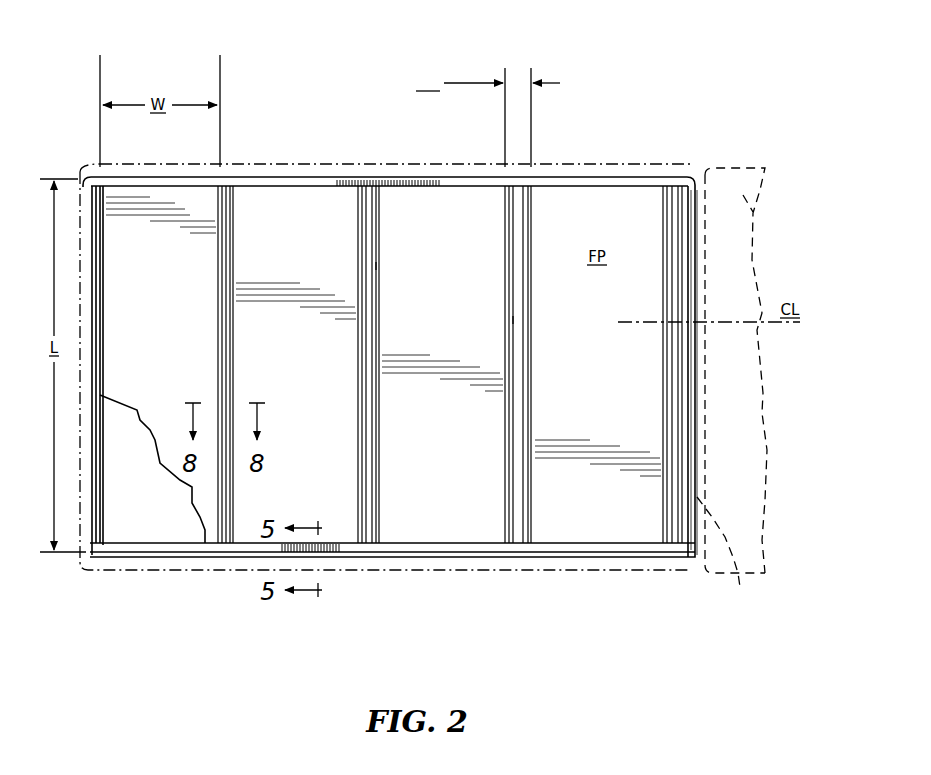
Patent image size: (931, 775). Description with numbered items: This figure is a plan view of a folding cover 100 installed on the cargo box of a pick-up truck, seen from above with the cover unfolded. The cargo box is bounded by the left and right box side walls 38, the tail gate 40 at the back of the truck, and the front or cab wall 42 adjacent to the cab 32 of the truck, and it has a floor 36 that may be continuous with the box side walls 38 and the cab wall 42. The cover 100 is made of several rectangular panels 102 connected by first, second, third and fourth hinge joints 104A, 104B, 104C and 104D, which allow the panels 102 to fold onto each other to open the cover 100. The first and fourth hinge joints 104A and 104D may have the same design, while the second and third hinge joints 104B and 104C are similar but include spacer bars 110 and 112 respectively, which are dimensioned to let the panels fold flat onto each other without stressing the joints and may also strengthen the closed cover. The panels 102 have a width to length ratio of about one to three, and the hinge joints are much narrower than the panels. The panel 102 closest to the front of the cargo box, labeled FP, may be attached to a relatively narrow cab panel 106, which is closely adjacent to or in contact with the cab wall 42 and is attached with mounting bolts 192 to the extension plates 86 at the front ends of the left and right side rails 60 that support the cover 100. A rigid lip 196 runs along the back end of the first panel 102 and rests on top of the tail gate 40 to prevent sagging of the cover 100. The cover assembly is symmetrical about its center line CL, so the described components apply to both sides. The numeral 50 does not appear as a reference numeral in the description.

The cab 32 is at (760, 213).
The floor 36 is at (157, 528).
The box side walls 38 is at (279, 165).
The tail gate 40 is at (84, 190).
The cab wall 42 is at (738, 590).
The stud spacing joint 50 is at (565, 146).
The side rails 60 is at (110, 537).
The extension plate 86 is at (686, 202).
The cover 100 is at (428, 532).
The panels 102 is at (207, 213).
The first hinge joint 104A is at (234, 358).
The second hinge joint 104B is at (380, 422).
The third hinge joint 104C is at (520, 395).
The fourth hinge joint 104D is at (670, 432).
The cab panel 106 is at (683, 203).
The spacer bar 110 is at (378, 266).
The spacer bar 112 is at (515, 320).
The mounting bolts 192 is at (698, 190).
The rigid lip 196 is at (103, 393).